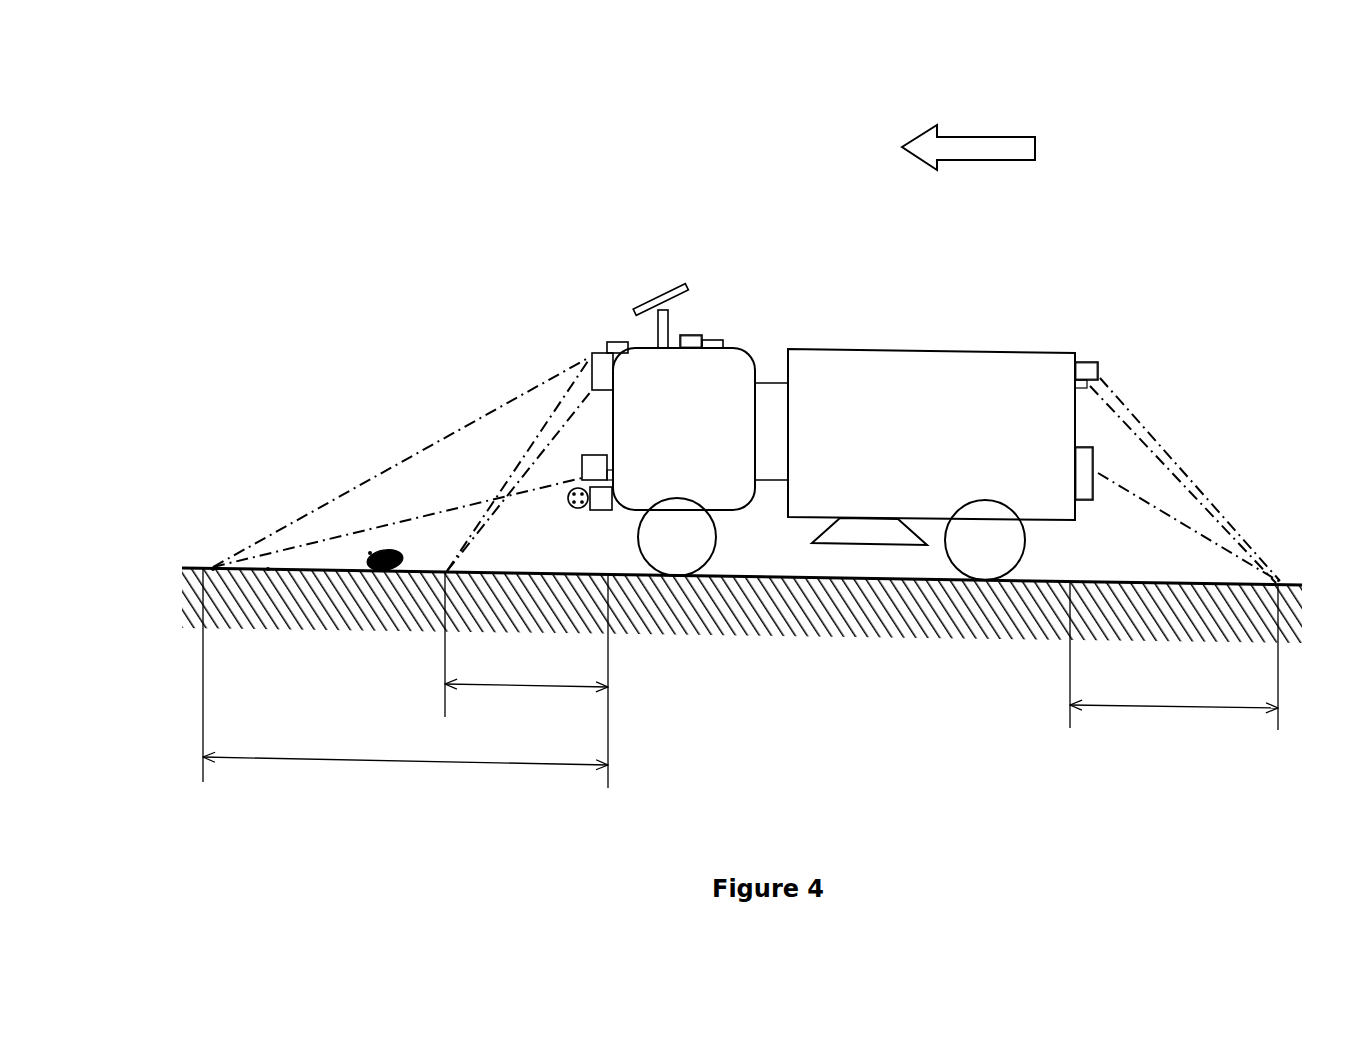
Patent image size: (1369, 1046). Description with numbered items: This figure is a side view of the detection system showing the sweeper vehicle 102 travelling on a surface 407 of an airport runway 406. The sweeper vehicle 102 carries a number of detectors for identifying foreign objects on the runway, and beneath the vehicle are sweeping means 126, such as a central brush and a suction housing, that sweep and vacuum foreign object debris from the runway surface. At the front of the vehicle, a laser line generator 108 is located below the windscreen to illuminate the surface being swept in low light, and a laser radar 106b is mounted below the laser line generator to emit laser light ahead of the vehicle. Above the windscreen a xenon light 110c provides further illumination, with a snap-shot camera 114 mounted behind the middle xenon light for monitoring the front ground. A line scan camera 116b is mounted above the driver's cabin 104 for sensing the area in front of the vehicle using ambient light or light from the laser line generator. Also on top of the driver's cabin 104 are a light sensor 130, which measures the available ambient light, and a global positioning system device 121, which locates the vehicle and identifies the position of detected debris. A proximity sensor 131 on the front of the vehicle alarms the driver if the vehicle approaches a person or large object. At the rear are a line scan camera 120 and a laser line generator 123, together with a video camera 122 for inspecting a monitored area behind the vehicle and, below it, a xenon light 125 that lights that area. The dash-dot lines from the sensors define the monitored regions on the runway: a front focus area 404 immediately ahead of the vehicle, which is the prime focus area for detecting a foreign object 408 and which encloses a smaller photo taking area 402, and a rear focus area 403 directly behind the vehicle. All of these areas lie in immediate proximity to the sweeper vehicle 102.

The sweeper vehicle 102 is at (900, 368).
The driver's cabin 104 is at (733, 478).
The laser radar 106b is at (580, 465).
The laser line generator 108 is at (363, 485).
The xenon light 110c is at (588, 390).
The snap-shot camera 114 is at (610, 338).
The line scan camera 116b is at (658, 277).
The line scan camera 120 is at (1105, 473).
The global positioning system (GPS) device 121 is at (717, 333).
The video camera 122 is at (1100, 377).
The laser line generator 123 is at (1195, 472).
The xenon light 125 is at (1088, 350).
The sweeping means 126 is at (887, 548).
The light sensor 130 is at (693, 332).
The proximity sensor 131 is at (583, 510).
The photo taking area 402 is at (526, 672).
The rear focus area 403 is at (1174, 691).
The front focus area 404 is at (405, 748).
The airport runway 406 is at (212, 570).
The surface 407 is at (268, 567).
The foreign object 408 is at (368, 552).